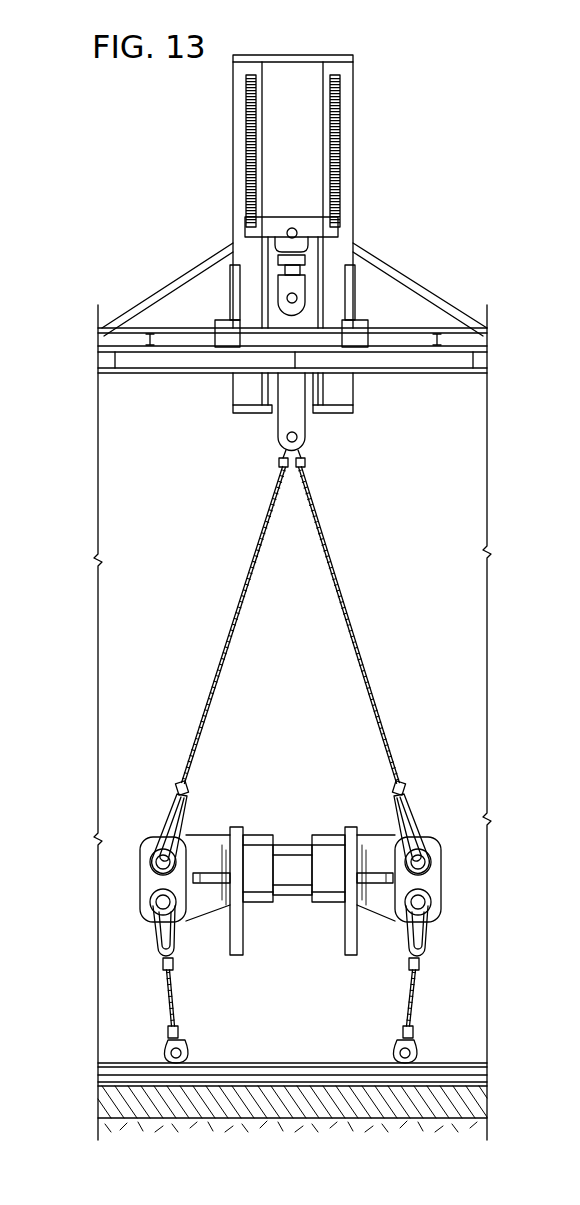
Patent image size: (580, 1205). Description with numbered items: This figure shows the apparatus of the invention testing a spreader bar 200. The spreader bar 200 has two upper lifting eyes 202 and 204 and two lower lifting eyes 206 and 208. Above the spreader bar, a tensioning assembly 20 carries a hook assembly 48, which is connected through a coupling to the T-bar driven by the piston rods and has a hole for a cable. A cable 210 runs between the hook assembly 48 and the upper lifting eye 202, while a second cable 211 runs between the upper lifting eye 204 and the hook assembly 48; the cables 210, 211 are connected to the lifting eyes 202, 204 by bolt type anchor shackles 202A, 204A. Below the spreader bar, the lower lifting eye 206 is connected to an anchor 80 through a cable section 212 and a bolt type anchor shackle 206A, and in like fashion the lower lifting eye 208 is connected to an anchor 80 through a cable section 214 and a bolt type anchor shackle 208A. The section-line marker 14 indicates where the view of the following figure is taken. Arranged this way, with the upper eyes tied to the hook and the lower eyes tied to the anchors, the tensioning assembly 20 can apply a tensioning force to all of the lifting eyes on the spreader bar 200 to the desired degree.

The tensioning assembly 20 is at (385, 148).
The hook assembly 48 is at (297, 422).
The second cable 211 is at (238, 598).
The cable 210 is at (345, 595).
The spreader bar 200 is at (297, 806).
The bolt type anchor shackle 204A is at (160, 818).
The bolt type anchor shackle 202A is at (423, 817).
The upper lifting eye 204 is at (150, 863).
The upper lifting eye 202 is at (433, 860).
The lower lifting eye 208 is at (150, 902).
The lower lifting eye 206 is at (430, 908).
The bolt type anchor shackle 208A is at (160, 935).
The bolt type anchor shackle 206A is at (418, 918).
The cable section 214 is at (176, 1002).
The cable section 212 is at (407, 1007).
The anchor 80 is at (163, 1058).
The section line 14 is at (477, 753).